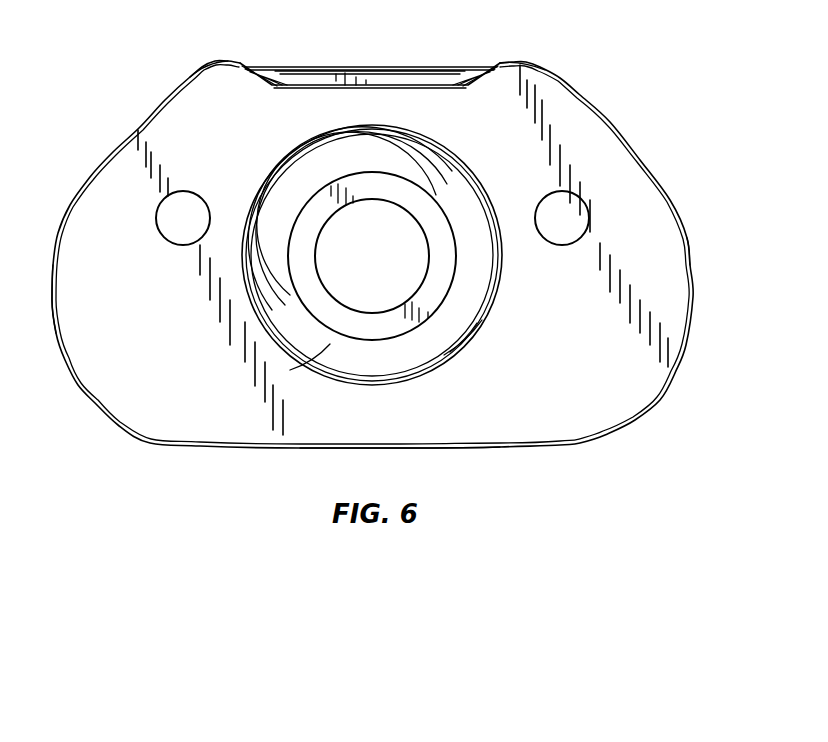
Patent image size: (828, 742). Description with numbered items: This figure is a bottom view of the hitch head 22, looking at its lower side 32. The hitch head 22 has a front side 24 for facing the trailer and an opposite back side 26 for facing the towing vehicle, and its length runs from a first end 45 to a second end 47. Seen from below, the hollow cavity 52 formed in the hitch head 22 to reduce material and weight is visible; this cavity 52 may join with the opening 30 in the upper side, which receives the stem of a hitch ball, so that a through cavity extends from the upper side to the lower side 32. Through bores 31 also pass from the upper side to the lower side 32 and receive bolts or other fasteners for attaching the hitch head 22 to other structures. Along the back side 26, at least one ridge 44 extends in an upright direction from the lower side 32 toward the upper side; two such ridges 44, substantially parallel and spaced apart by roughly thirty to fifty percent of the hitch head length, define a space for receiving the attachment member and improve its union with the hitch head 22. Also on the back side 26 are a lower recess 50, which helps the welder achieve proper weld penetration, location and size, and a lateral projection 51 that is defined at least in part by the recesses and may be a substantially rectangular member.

The hitch head 22 is at (690, 237).
The front side 24 is at (467, 447).
The back side 26 is at (185, 78).
The opening 30 is at (395, 210).
The through bores 31 is at (157, 217).
The lower side 32 is at (655, 310).
The ridge 44 is at (522, 62).
The first end 45 is at (56, 338).
The second end 47 is at (690, 340).
The lower recess 50 is at (378, 77).
The lateral projection 51 is at (310, 68).
The hollow cavity 52 is at (280, 367).